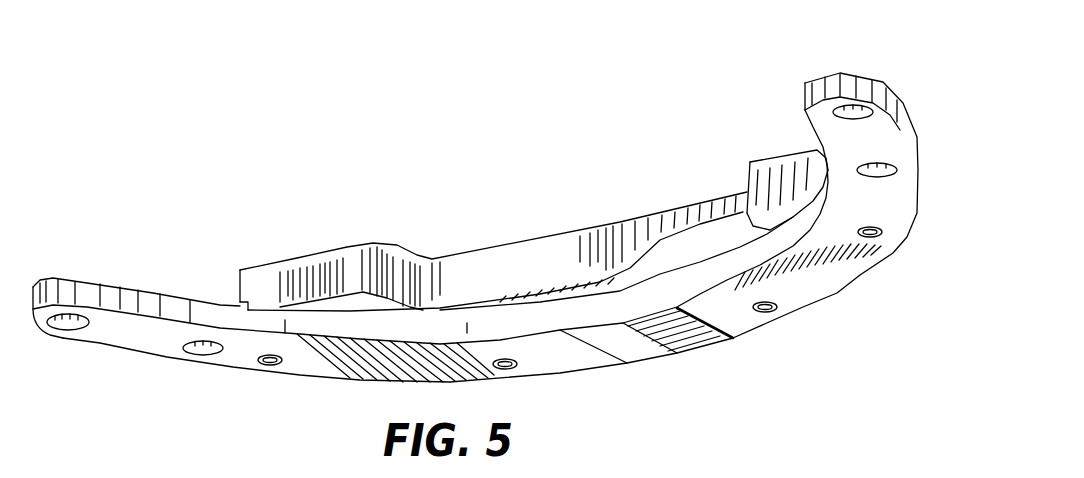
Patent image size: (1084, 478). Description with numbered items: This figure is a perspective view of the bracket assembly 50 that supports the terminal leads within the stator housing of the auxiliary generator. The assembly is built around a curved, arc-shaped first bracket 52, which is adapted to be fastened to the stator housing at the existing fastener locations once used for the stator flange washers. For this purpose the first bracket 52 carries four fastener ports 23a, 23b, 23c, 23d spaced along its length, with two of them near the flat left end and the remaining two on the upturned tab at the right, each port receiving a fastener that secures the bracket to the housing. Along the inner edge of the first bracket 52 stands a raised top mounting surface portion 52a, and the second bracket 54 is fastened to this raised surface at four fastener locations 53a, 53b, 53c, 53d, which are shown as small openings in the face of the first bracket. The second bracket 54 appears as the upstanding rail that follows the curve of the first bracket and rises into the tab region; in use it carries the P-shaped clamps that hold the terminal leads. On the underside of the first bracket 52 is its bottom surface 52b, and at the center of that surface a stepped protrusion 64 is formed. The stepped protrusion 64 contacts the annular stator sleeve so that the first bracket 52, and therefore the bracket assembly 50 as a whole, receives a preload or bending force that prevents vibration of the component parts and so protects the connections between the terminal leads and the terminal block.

The bracket assembly 50 is at (658, 128).
The first bracket 52 is at (157, 292).
The raised top mounting surface portion 52a is at (283, 304).
The bottom surface 52b is at (606, 352).
The second bracket 54 is at (537, 238).
The stepped protrusion 64 is at (701, 343).
The fastener port 23a is at (70, 329).
The fastener port 23b is at (201, 354).
The fastener port 23c is at (880, 175).
The fastener port 23d is at (853, 108).
The fastener location 53a is at (273, 365).
The fastener location 53b is at (517, 366).
The fastener location 53c is at (768, 312).
The fastener location 53d is at (872, 238).